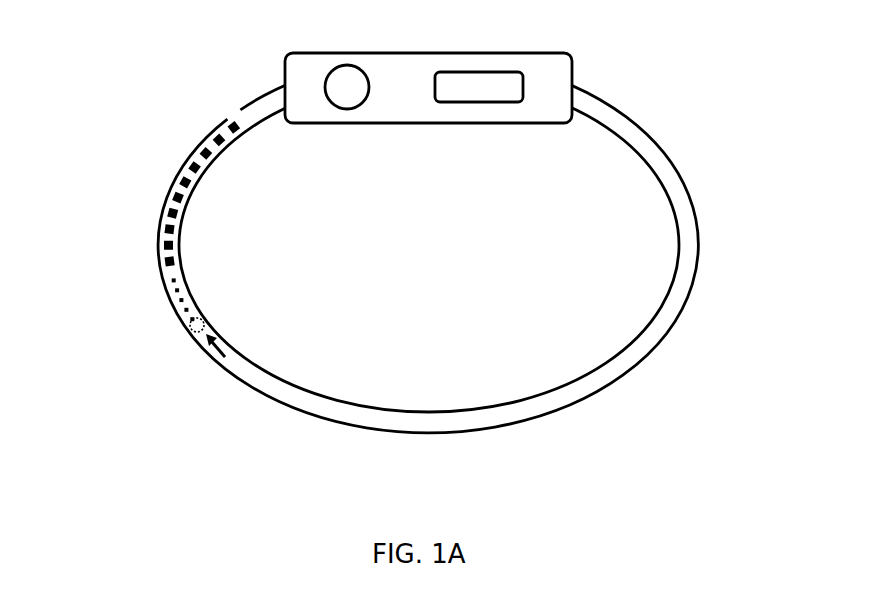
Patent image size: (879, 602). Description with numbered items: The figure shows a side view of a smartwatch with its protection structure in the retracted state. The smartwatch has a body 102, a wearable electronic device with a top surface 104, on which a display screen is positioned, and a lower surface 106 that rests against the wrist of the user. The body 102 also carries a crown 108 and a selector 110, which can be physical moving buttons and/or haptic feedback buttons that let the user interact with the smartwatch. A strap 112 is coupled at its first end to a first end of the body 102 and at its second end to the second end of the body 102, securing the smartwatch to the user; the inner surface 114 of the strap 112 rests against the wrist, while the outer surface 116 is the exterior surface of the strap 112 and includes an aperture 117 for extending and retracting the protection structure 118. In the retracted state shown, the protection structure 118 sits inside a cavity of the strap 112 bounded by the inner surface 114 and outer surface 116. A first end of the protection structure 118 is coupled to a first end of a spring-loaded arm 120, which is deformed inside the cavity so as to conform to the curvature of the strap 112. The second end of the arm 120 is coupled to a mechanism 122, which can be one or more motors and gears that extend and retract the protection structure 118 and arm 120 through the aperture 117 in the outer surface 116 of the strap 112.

The body 102 is at (548, 70).
The top surface 104 is at (318, 53).
The lower surface 106 is at (395, 125).
The crown 108 is at (349, 98).
The selector 110 is at (483, 102).
The strap 112 is at (690, 252).
The inner surface 114 is at (668, 293).
The outer surface 116 is at (695, 283).
The aperture 117 is at (225, 108).
The protection structure 118 is at (183, 190).
The arm 120 is at (173, 297).
The mechanism 122 is at (192, 335).